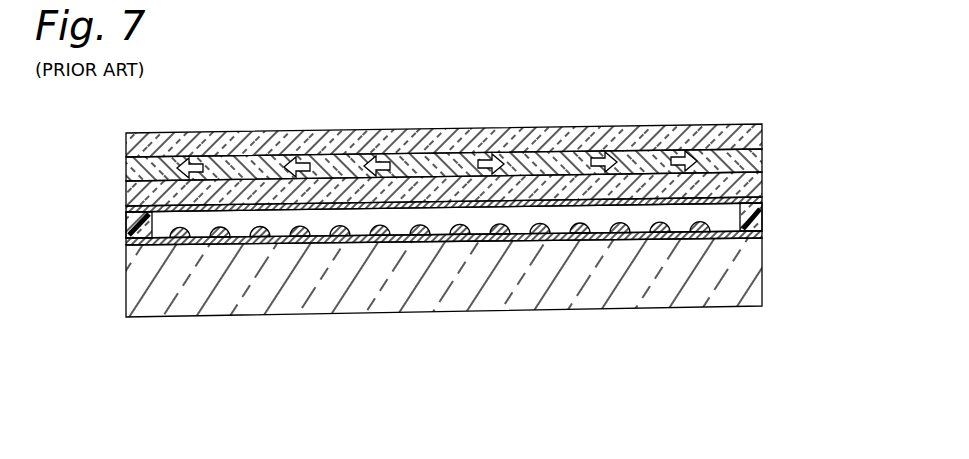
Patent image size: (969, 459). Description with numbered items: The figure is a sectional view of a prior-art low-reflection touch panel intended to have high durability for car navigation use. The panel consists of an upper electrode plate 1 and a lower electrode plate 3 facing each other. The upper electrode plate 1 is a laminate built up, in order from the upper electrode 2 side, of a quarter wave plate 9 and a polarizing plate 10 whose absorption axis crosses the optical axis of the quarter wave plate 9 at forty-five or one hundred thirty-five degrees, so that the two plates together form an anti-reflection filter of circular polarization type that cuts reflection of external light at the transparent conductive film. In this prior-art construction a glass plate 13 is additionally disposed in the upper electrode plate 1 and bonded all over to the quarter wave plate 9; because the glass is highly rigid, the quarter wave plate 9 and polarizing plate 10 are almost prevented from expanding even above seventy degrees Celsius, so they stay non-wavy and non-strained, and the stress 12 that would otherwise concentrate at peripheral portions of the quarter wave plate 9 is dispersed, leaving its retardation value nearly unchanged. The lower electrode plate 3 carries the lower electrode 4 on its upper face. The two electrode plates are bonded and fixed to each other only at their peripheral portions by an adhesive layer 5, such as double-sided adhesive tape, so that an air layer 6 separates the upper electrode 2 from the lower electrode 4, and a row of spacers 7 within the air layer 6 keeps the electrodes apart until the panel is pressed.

The upper electrode plate 1 is at (511, 133).
The upper electrode 2 is at (408, 210).
The lower electrode plate 3 is at (733, 272).
The lower electrode 4 is at (283, 237).
The adhesive layer 5 is at (130, 233).
The air layer 6 is at (353, 220).
The spacer 7 is at (587, 238).
The quarter wave plate 9 is at (482, 121).
The polarizing plate 10 is at (763, 130).
The stress 12 is at (613, 149).
The glass plate 13 is at (483, 185).